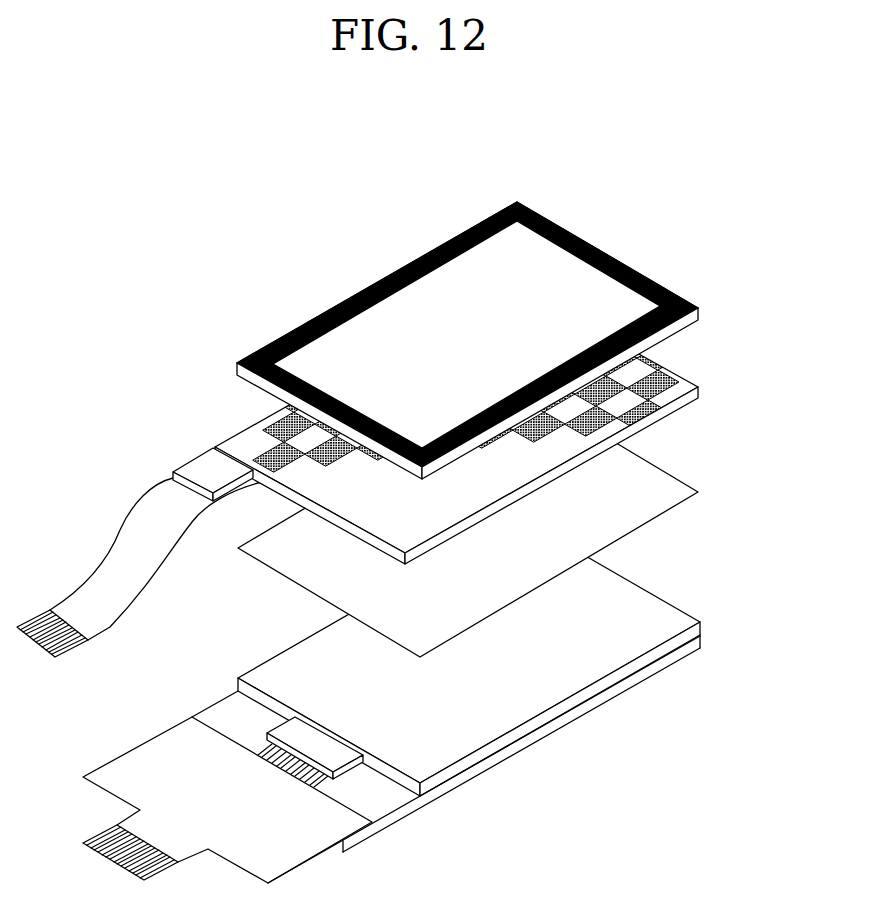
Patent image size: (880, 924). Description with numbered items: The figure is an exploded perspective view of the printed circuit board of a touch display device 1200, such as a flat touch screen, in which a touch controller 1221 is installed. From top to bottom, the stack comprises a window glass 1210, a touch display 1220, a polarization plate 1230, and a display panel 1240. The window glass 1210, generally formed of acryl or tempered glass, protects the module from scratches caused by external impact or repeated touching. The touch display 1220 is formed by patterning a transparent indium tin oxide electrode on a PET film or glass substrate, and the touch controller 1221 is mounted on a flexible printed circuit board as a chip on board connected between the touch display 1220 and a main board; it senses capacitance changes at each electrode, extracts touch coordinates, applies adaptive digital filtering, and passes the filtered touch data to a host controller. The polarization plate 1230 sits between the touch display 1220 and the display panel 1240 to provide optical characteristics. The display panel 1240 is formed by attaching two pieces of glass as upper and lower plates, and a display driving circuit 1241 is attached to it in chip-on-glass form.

The touch display device 1200 is at (736, 167).
The window glass 1210 is at (648, 274).
The touch display 1220 is at (682, 378).
The touch controller 1221 is at (205, 467).
The polarization plate 1230 is at (670, 483).
The display panel 1240 is at (663, 617).
The display driving circuit 1241 is at (293, 733).